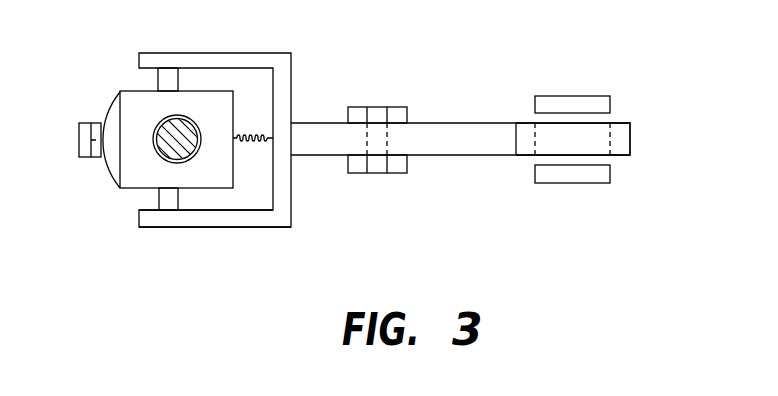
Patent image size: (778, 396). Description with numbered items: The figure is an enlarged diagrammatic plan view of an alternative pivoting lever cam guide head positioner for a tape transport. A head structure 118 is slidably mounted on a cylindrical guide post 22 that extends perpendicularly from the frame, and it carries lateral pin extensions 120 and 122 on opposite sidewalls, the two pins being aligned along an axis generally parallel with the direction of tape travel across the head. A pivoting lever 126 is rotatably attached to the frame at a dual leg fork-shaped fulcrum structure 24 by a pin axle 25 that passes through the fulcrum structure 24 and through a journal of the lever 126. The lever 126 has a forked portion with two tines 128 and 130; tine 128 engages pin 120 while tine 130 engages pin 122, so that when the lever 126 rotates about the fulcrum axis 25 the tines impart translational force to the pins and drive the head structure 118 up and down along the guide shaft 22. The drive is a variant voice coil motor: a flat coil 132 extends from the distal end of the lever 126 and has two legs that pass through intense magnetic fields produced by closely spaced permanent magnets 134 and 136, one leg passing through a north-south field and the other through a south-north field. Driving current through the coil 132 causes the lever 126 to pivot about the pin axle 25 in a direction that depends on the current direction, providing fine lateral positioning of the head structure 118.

The guide post 22 is at (183, 150).
The fulcrum structure 24 is at (390, 173).
The pin axle 25 is at (379, 107).
The head structure 118 is at (112, 112).
The lateral pin extension 120 is at (170, 80).
The lateral pin extension 122 is at (168, 204).
The pivoting lever 126 is at (455, 123).
The tine 128 is at (247, 58).
The tine 130 is at (248, 227).
The flat coil 132 is at (632, 138).
The permanent magnet 134 is at (589, 103).
The permanent magnet 136 is at (597, 178).